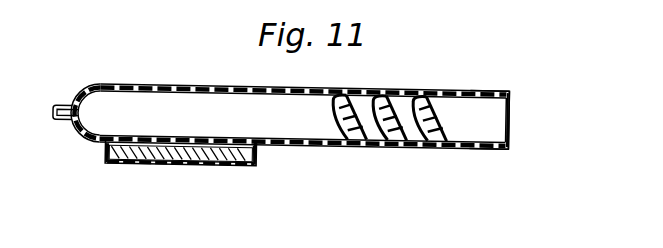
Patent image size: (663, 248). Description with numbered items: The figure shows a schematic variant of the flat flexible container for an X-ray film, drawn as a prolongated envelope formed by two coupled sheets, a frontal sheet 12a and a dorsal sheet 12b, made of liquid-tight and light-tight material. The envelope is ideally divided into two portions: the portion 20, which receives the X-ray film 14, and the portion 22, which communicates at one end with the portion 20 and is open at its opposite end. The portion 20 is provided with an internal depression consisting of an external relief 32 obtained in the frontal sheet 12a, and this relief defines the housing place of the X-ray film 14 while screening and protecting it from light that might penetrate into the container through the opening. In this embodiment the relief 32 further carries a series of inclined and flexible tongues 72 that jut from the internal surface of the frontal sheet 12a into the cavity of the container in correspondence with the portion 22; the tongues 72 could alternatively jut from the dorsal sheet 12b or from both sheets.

The portion 20 is at (147, 81).
The dorsal sheet 12b is at (219, 85).
The portion 22 is at (466, 86).
The frontal sheet 12a is at (287, 147).
The X-ray film 14 is at (125, 165).
The external relief 32 is at (220, 164).
The inclined flexible tongues 72 is at (418, 147).